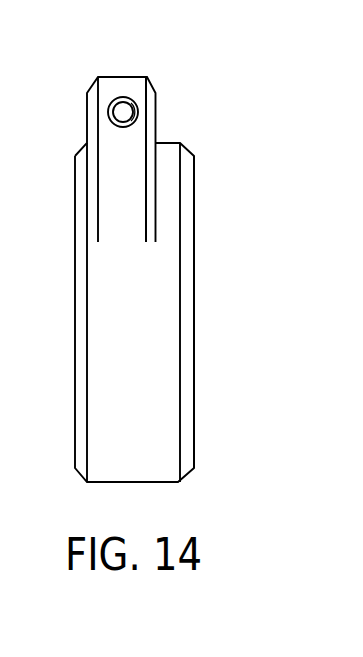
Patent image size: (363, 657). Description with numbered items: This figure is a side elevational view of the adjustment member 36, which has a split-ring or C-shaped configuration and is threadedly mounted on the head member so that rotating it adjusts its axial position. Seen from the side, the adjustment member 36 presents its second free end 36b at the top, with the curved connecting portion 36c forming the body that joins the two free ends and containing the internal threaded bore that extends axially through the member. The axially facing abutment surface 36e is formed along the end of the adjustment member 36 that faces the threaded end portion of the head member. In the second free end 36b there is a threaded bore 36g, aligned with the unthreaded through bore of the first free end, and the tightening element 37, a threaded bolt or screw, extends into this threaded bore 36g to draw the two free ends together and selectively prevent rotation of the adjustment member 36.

The adjustment member 36 is at (181, 68).
The second free end 36b is at (148, 130).
The curved connecting portion 36c is at (125, 453).
The axially facing abutment surface 36e is at (195, 319).
The threaded bore 36g is at (127, 114).
The tightening element 37 is at (113, 111).